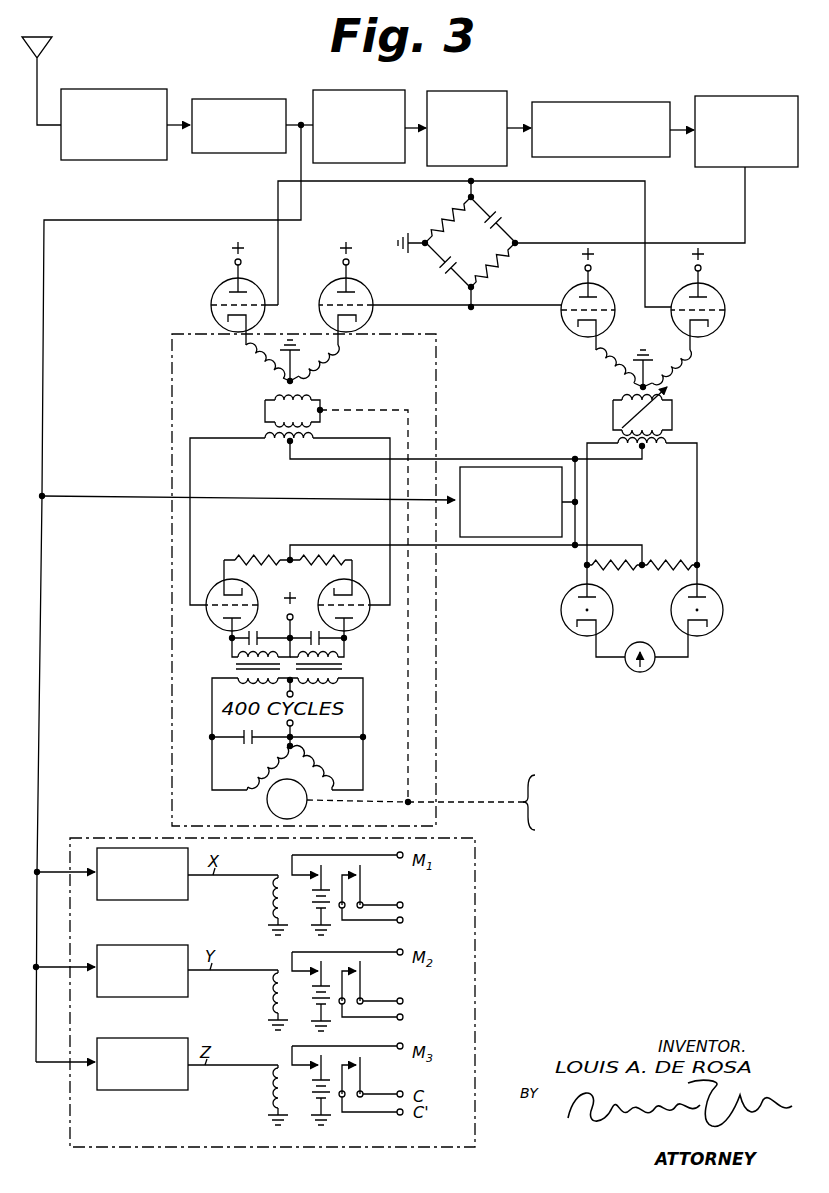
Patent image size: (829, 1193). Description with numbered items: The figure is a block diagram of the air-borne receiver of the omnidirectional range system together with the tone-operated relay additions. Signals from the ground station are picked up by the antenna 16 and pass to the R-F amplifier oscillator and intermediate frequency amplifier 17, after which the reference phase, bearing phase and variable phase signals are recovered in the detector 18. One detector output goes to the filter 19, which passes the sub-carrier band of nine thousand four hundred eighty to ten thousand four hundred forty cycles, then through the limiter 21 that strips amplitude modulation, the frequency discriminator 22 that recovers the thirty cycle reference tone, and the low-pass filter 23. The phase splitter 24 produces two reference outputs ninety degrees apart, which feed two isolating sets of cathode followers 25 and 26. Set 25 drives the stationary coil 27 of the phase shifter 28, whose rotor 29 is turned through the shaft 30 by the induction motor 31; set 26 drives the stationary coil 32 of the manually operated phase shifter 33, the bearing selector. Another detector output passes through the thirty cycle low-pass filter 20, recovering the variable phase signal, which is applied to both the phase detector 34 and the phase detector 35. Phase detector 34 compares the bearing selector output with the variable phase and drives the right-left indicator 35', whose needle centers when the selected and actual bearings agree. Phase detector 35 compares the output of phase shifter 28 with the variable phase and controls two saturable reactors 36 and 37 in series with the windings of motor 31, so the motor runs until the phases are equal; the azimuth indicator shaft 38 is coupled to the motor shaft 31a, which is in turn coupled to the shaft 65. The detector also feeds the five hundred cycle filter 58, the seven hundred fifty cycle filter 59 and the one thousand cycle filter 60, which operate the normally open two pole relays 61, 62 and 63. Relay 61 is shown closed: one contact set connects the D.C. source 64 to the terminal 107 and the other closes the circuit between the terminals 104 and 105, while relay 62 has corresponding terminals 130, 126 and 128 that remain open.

The antenna 16 is at (48, 36).
The R-F amplifier oscillator and intermediate frequency amplifier 17 is at (113, 89).
The detector 18 is at (236, 99).
The filter 19 is at (349, 90).
The 30 cycle low-pass filter 20 is at (514, 537).
The limiter 21 is at (490, 92).
The frequency discriminator 22 is at (600, 102).
The low-pass filter 23 is at (748, 96).
The phase splitter 24 is at (415, 211).
The cathode followers 25 is at (315, 251).
The cathode followers 26 is at (662, 261).
The stationary coil 27 is at (326, 363).
The phase shifter 28 is at (249, 381).
The rotor 29 is at (316, 399).
The shaft 30 is at (397, 410).
The induction motor 31 is at (267, 801).
The motor shaft 31a is at (378, 797).
The stationary coil 32 is at (683, 364).
The phase shifter 33 is at (684, 400).
The phase detector 34 is at (668, 603).
The phase detector 35 is at (288, 596).
The right-left indicator 35' is at (657, 668).
The saturable reactor 36 is at (219, 660).
The saturable reactor 37 is at (354, 665).
The shaft of the azimuth indicator 38 is at (478, 801).
The 500 c.p.s. filter 58 is at (130, 900).
The 750 c.p.s. filter 59 is at (120, 997).
The 1,000 c.p.s. filter 60 is at (162, 1090).
The relay 61 is at (268, 904).
The relay 62 is at (268, 999).
The relay 63 is at (268, 1094).
The source of D.C. power 64 is at (316, 905).
The shaft 65 is at (316, 1001).
The terminal 104 is at (404, 902).
The terminal 105 is at (403, 924).
The terminal 107 is at (397, 858).
The terminal 126 is at (404, 999).
The terminal 128 is at (403, 1021).
The terminal 130 is at (397, 955).